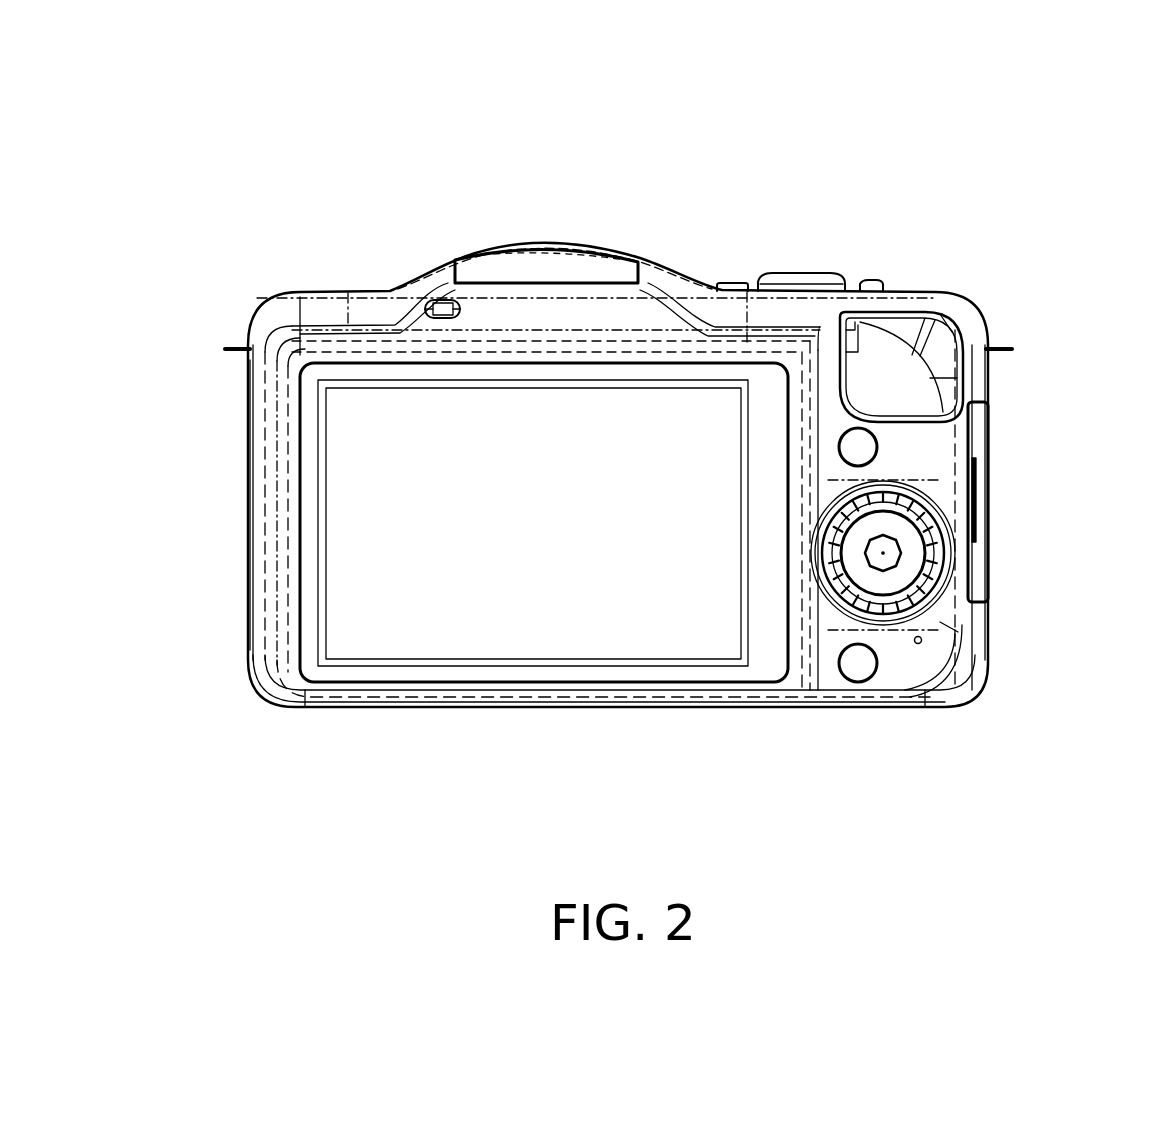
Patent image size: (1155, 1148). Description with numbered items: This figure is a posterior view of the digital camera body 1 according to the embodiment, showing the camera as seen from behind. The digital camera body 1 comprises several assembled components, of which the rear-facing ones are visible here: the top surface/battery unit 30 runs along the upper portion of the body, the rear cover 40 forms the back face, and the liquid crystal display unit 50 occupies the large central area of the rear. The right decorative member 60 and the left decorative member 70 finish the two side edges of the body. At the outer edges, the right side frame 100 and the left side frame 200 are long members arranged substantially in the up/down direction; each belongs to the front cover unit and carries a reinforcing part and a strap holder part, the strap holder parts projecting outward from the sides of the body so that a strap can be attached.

The digital camera body 1 is at (940, 149).
The top surface/battery unit 30 is at (667, 288).
The rear cover 40 is at (900, 667).
The liquid crystal display unit 50 is at (527, 632).
The right decorative member 60 is at (248, 497).
The left decorative member 70 is at (990, 500).
The right side frame 100 is at (246, 344).
The left side frame 200 is at (1004, 344).